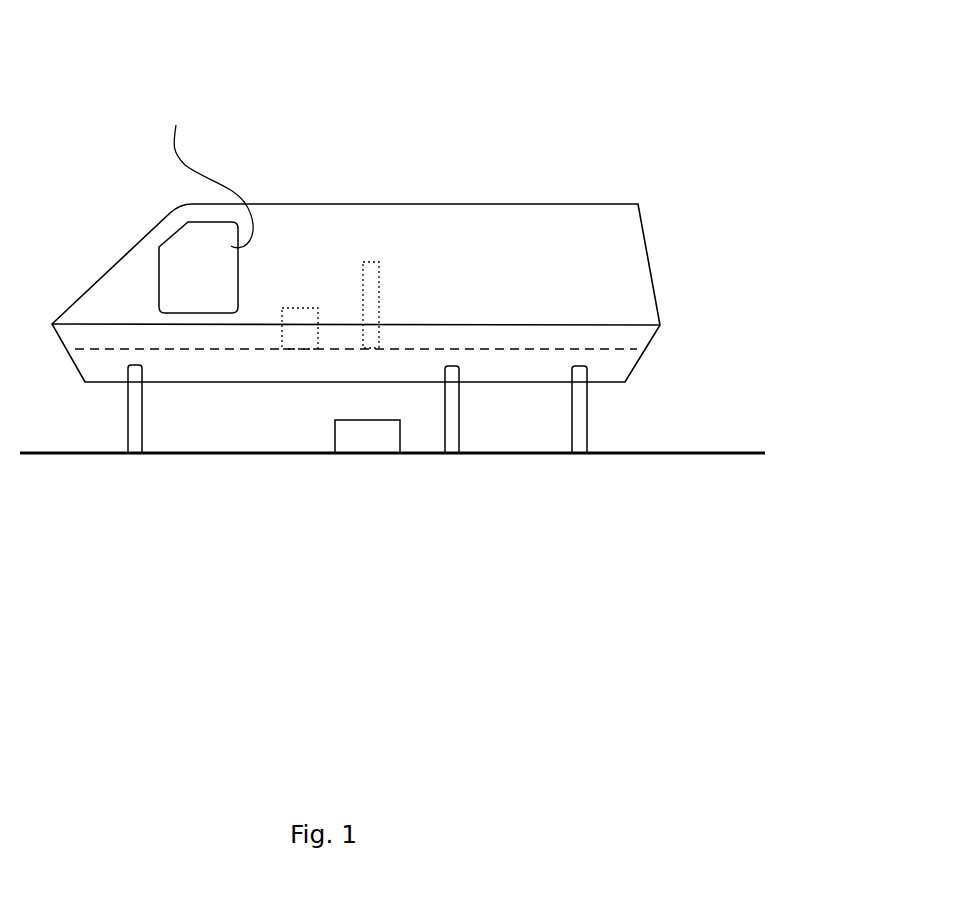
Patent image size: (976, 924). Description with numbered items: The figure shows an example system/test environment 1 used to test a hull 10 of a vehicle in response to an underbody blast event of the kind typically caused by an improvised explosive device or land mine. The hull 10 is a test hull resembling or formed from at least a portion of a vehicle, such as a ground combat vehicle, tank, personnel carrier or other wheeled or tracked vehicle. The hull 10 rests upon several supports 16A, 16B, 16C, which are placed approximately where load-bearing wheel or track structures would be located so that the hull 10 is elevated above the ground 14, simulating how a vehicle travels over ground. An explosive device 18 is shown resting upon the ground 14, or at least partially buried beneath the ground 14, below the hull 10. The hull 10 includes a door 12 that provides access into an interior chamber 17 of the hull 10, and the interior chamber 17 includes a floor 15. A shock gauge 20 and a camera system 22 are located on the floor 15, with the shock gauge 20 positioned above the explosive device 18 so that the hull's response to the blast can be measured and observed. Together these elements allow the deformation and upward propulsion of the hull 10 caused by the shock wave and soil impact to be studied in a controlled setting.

The system/test environment 1 is at (572, 83).
The hull 10 is at (520, 287).
The door 12 is at (199, 267).
The ground 14 is at (677, 452).
The floor 15 is at (532, 350).
The support 16A is at (133, 427).
The support 16B is at (455, 432).
The support 16C is at (580, 432).
The interior chamber 17 is at (209, 172).
The explosive device 18 is at (379, 447).
The shock gauge 20 is at (380, 285).
The camera system 22 is at (318, 310).